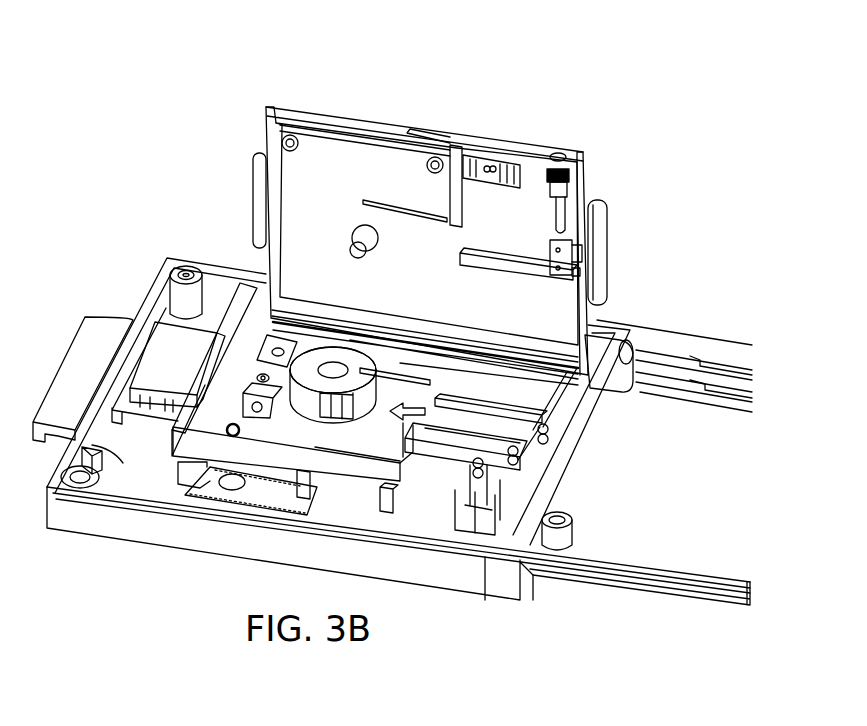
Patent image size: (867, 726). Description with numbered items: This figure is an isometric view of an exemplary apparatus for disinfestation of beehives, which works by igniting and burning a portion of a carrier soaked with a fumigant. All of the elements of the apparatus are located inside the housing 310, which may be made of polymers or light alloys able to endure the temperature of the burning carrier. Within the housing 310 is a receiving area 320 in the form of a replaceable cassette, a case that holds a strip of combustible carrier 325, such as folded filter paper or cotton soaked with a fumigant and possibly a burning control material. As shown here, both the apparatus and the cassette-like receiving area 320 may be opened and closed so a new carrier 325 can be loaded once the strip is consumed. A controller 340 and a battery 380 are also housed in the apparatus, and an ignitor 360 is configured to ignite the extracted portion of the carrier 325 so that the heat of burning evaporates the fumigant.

The housing 310 is at (620, 323).
The receiving area 320 is at (334, 175).
The carrier 325 is at (290, 383).
The controller 340 is at (210, 490).
The ignitor 360 is at (577, 252).
The battery 380 is at (162, 358).